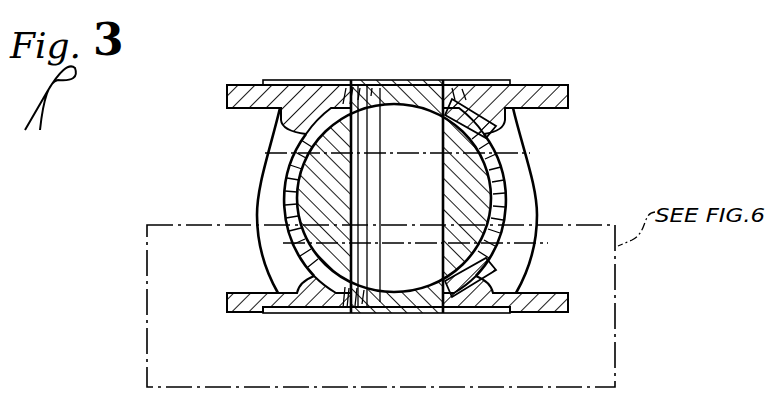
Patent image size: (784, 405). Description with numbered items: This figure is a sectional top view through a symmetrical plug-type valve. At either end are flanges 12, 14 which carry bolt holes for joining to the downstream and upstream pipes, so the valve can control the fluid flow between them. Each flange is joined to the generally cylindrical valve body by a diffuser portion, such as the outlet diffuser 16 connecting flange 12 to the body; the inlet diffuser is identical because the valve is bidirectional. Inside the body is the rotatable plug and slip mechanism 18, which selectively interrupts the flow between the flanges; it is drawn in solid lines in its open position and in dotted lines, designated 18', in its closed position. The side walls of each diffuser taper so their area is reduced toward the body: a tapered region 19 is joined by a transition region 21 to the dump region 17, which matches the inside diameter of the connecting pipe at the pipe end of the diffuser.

The flange 12 is at (225, 304).
The flange 14 is at (228, 95).
The outlet diffuser 16 is at (438, 294).
The dump region 17 is at (300, 314).
The plug and slip mechanism 18 is at (391, 203).
The plug and slip combination in closed configuration 18' is at (400, 212).
The tapered region 19 is at (352, 307).
The transition region 21 is at (347, 308).